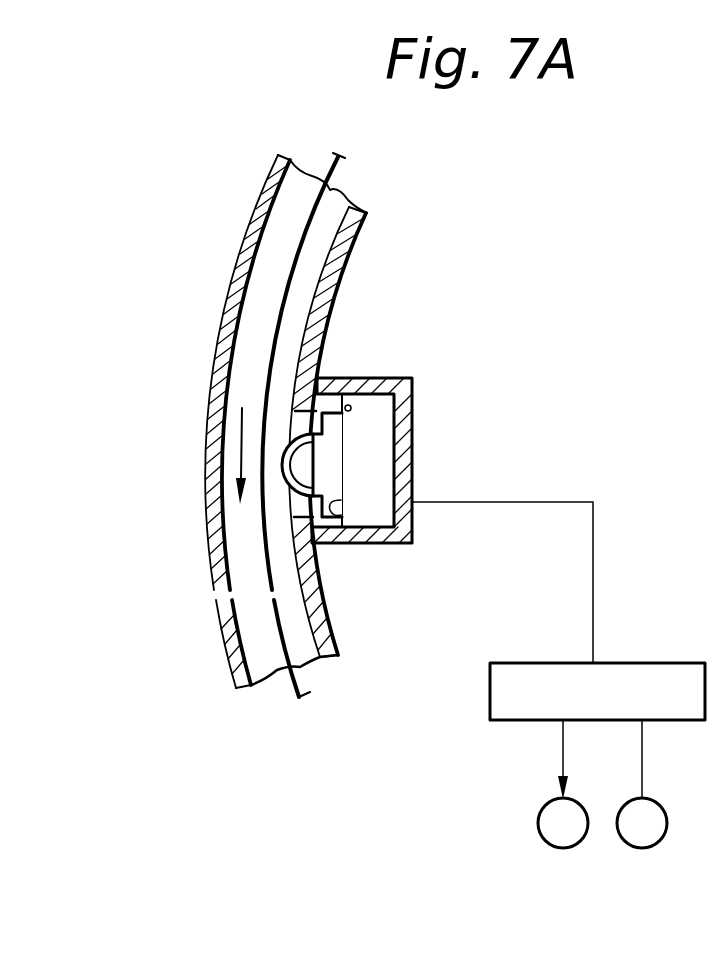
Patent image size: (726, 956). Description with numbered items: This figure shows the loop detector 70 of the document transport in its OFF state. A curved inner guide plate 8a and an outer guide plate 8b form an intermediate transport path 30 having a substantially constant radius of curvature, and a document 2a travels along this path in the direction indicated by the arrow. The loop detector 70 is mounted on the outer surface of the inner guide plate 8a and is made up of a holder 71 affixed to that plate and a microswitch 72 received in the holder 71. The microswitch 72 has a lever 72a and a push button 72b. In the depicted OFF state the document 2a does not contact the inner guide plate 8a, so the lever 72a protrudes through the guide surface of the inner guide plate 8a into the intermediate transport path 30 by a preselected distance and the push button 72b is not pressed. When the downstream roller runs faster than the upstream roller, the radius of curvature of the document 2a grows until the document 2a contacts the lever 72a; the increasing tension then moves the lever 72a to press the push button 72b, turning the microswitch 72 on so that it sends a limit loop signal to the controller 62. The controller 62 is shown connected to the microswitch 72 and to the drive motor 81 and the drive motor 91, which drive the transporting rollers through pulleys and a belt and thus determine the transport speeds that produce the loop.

The document 2a is at (291, 275).
The inner guide plate 8a is at (336, 280).
The outer guide plate 8b is at (228, 338).
The intermediate transport path 30 is at (240, 558).
The loop detector 70 is at (306, 483).
The holder 71 is at (400, 408).
The microswitch 72 is at (378, 470).
The lever 72a is at (283, 463).
The push button 72b is at (332, 514).
The controller 62 is at (669, 663).
The drive motor 81 is at (538, 826).
The drive motor 91 is at (668, 826).